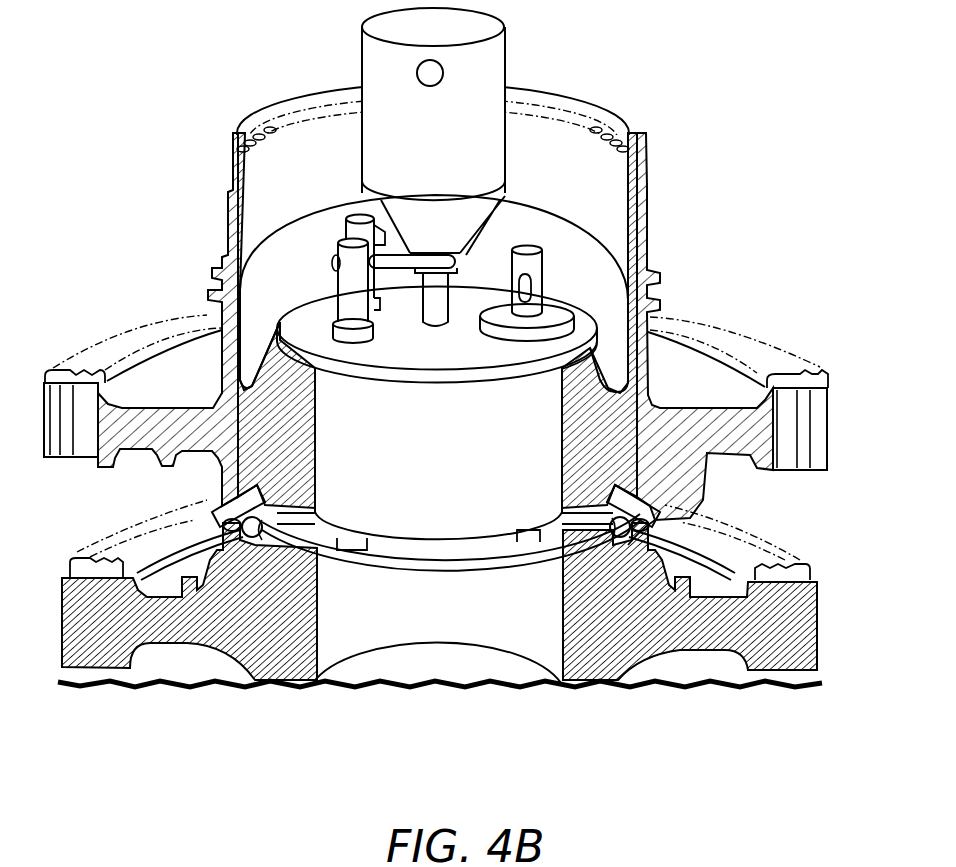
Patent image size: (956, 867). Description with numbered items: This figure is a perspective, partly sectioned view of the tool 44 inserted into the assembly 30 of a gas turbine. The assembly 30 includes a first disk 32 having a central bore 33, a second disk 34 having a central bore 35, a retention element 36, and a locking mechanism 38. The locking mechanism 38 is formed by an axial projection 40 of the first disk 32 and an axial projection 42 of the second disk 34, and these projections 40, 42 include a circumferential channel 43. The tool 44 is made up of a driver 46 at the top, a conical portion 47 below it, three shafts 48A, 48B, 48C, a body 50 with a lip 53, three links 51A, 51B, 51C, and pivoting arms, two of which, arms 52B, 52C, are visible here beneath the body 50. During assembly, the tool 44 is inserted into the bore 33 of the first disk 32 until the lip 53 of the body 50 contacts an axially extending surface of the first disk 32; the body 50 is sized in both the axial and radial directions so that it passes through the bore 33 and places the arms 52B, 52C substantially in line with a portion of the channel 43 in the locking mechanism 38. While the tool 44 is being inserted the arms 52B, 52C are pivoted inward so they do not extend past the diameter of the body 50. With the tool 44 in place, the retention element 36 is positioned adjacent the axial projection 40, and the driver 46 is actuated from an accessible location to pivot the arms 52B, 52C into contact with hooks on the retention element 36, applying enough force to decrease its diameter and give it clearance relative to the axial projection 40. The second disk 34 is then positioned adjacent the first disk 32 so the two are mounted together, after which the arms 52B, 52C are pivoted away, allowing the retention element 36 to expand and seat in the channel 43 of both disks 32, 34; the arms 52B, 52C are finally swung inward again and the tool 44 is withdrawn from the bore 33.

The assembly 30 is at (148, 220).
The first disk 32 is at (703, 417).
The central bore 33 is at (558, 125).
The second disk 34 is at (697, 633).
The central bore 35 is at (403, 645).
The retention element 36 is at (440, 575).
The locking mechanism 38 is at (675, 508).
The axial projection 40 is at (207, 510).
The axial projection 42 is at (213, 537).
The circumferential channel 43 is at (263, 533).
The tool 44 is at (515, 30).
The driver 46 is at (487, 107).
The conical portion 47 is at (507, 196).
The shaft 48A is at (358, 222).
The shaft 48B is at (345, 243).
The shaft 48C is at (528, 246).
The body 50 is at (300, 332).
The link 51A is at (386, 230).
The link 51B is at (500, 215).
The link 51C is at (530, 292).
The arm 52B is at (335, 545).
The arm 52C is at (550, 528).
The lip 53 is at (594, 340).